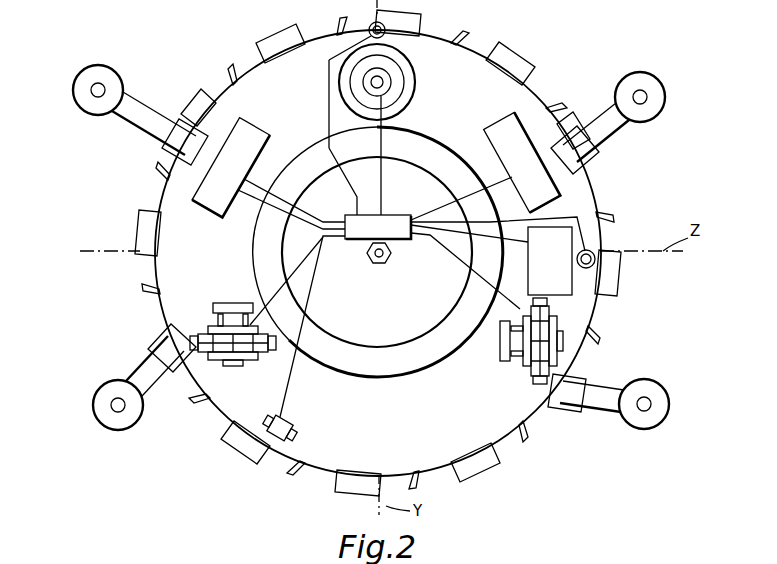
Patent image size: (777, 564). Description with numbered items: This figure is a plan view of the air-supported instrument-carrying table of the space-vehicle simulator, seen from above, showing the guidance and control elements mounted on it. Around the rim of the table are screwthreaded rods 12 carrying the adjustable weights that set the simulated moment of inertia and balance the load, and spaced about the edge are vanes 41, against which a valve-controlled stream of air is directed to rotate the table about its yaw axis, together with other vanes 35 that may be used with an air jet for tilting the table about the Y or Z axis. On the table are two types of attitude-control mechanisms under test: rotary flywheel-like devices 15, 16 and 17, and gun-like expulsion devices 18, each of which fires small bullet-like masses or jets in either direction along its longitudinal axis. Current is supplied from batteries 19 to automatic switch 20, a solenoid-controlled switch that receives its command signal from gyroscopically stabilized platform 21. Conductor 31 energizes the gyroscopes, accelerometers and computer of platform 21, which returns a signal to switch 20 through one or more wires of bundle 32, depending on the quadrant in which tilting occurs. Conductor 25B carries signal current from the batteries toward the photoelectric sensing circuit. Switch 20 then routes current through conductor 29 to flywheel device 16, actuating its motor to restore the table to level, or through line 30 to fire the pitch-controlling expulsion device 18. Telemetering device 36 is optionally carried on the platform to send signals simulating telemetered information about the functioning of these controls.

The screwthreaded rods 12 is at (666, 92).
The rotary flywheel-like device 15 is at (252, 362).
The rotary flywheel-like device 16 is at (523, 366).
The rotary flywheel-like device 17 is at (416, 82).
The expulsion devices 18 is at (372, 25).
The batteries 19 is at (511, 122).
The automatic switch 20 is at (395, 215).
The gyroscopically stabilized platform 21 is at (255, 121).
The conductor 25B is at (452, 213).
The conductor 29 is at (484, 282).
The line 30 is at (329, 75).
The conductor 31 is at (281, 198).
The wire bundle 32 is at (259, 206).
The vanes 35 is at (562, 407).
The telemetering device 36 is at (491, 260).
The vanes 41 is at (602, 331).